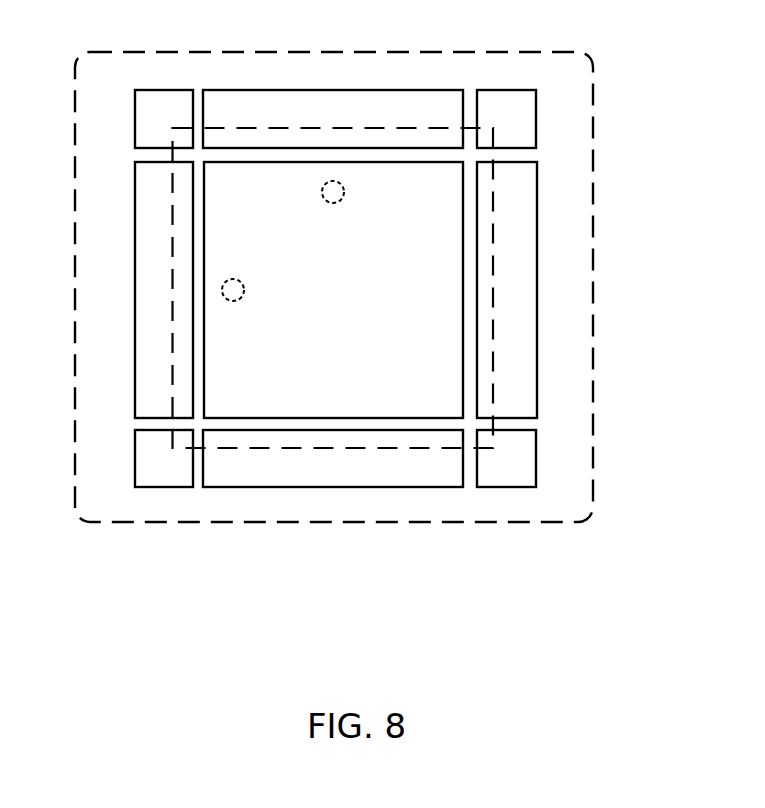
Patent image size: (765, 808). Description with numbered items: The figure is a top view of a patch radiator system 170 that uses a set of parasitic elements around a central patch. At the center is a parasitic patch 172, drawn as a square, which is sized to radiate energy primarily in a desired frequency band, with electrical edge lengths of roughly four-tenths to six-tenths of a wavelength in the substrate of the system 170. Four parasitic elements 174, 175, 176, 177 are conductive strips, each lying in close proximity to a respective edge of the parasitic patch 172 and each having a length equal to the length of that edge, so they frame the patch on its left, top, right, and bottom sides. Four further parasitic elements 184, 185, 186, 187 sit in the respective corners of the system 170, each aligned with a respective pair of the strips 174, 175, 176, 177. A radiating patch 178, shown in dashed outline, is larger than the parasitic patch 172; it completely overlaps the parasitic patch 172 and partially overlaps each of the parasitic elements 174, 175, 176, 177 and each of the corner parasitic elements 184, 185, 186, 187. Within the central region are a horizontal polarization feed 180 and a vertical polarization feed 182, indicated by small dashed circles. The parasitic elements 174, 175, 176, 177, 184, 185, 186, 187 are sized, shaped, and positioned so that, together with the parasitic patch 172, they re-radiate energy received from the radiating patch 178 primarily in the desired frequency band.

The patch radiator system 170 is at (333, 52).
The parasitic patch 172 is at (406, 372).
The parasitic element 174 is at (135, 287).
The parasitic element 175 is at (287, 90).
The parasitic element 176 is at (537, 243).
The parasitic element 177 is at (297, 487).
The radiating patch 178 is at (493, 348).
The horizontal polarization feed 180 is at (245, 287).
The vertical polarization feed 182 is at (343, 190).
The parasitic element 184 is at (163, 90).
The parasitic element 185 is at (502, 90).
The parasitic element 186 is at (500, 487).
The parasitic element 187 is at (165, 487).